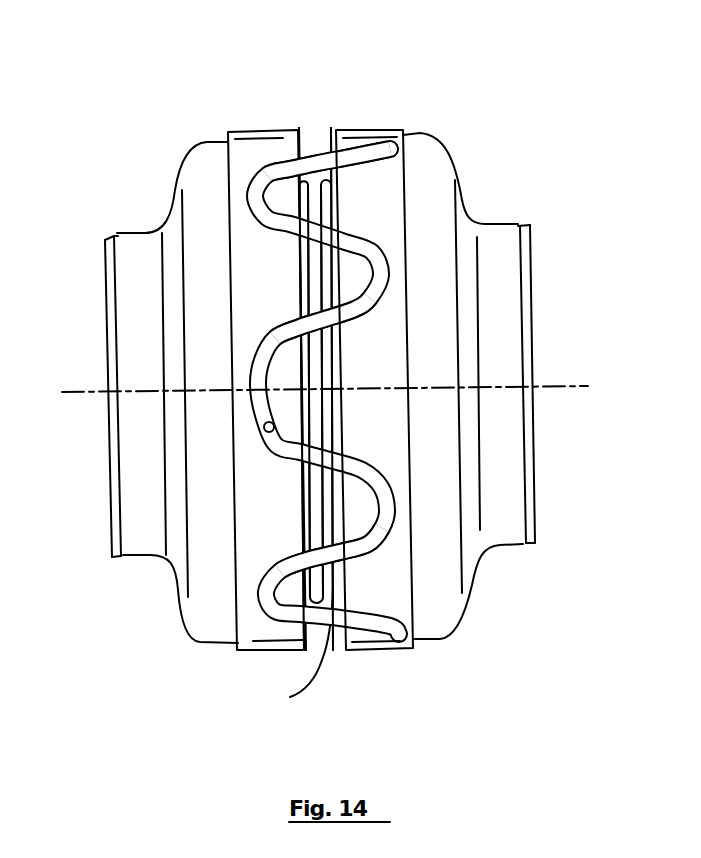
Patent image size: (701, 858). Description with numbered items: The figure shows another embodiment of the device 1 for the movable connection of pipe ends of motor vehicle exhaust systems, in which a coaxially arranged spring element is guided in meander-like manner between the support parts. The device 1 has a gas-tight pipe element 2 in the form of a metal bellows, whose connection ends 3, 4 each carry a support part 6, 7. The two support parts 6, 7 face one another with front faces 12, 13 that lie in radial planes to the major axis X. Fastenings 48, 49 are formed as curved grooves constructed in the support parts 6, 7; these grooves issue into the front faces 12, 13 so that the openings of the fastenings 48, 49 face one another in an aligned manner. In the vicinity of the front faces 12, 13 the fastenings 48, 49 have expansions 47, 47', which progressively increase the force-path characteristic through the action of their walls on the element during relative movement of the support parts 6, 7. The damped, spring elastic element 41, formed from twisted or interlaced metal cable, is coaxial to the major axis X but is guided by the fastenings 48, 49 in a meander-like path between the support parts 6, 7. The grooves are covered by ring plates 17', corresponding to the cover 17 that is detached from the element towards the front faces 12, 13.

The device 1 is at (205, 688).
The pipe element 2 is at (302, 650).
The connection end 3 is at (104, 246).
The connection end 4 is at (531, 232).
The support part 6 is at (173, 210).
The support part 7 is at (470, 238).
The front face 12 is at (299, 128).
The front face 13 is at (331, 128).
The cover 17 is at (408, 365).
The ring plate 17' is at (238, 360).
The spring elastic element 41 is at (318, 155).
The expansion 47 is at (156, 328).
The expansion 47' is at (476, 341).
The fastening 48 is at (268, 432).
The fastening 49 is at (377, 250).
The major axis X is at (573, 386).